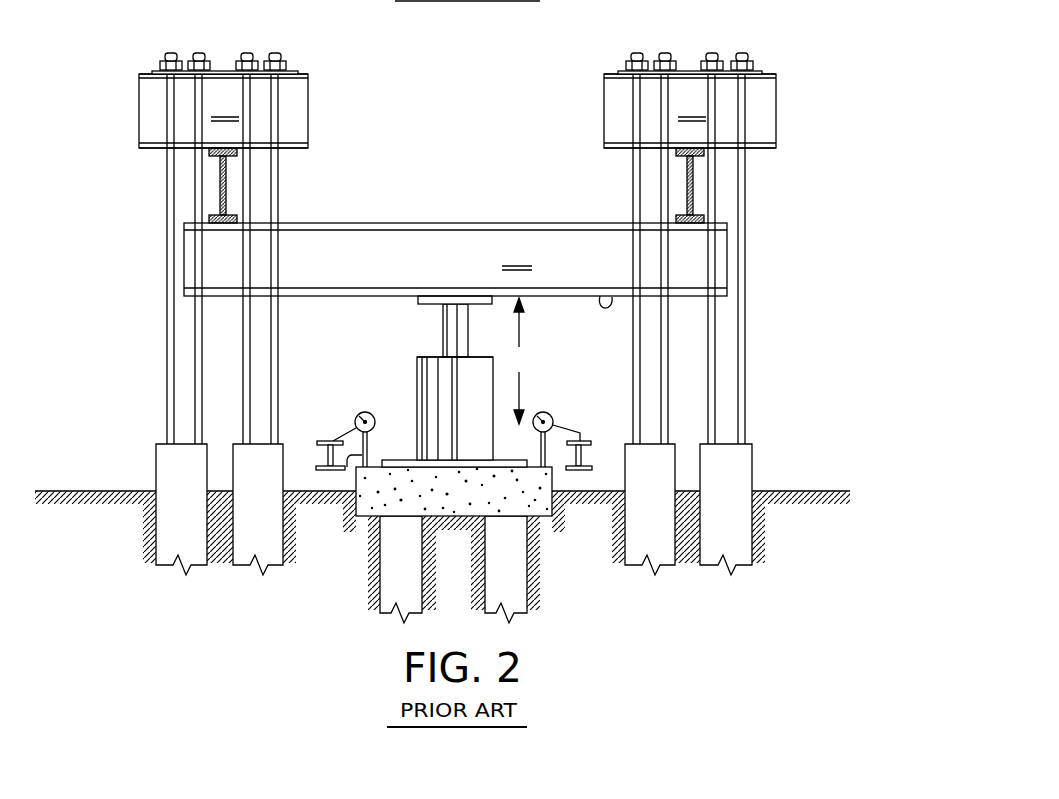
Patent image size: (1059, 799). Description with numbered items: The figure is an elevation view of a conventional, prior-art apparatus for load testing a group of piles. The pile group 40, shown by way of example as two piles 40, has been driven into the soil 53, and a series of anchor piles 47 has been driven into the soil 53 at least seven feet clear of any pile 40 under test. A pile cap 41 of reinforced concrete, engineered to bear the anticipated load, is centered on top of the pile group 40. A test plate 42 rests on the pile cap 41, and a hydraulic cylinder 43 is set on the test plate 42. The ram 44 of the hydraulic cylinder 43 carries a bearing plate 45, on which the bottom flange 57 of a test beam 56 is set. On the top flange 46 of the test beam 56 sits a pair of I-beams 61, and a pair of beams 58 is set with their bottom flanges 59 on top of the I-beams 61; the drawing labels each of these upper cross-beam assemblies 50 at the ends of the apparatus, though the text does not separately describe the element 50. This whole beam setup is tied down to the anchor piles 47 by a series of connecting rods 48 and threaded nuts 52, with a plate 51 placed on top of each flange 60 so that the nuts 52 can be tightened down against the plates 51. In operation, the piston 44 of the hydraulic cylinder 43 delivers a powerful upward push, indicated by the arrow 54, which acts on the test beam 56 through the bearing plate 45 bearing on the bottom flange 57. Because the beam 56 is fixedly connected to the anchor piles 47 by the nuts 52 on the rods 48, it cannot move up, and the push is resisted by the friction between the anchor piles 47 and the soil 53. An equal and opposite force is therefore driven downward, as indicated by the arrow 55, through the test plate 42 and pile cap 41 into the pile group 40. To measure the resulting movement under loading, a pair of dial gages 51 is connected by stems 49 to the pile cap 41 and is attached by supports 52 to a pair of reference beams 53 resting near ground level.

The pile group 40 is at (415, 581).
The pile cap 41 is at (535, 506).
The test plate 42 is at (392, 458).
The hydraulic cylinder 43 is at (418, 383).
The ram 44 is at (443, 340).
The bearing plate 45 is at (424, 304).
The top flange 46 is at (447, 222).
The anchor piles 47 is at (196, 516).
The connecting rods 48 is at (198, 365).
The stems 49 is at (540, 451).
The cross beam box 50 is at (139, 106).
The plate 51 is at (296, 70).
The threaded nuts 52 is at (172, 54).
The soil 53 is at (812, 465).
The arrow 54 is at (523, 330).
The arrow 55 is at (522, 375).
The test beam 56 is at (517, 256).
The bottom flange 57 is at (600, 296).
The beams 58 is at (459, 106).
The bottom flanges 59 is at (299, 149).
The flange 60 is at (150, 70).
The I-beams 61 is at (222, 192).